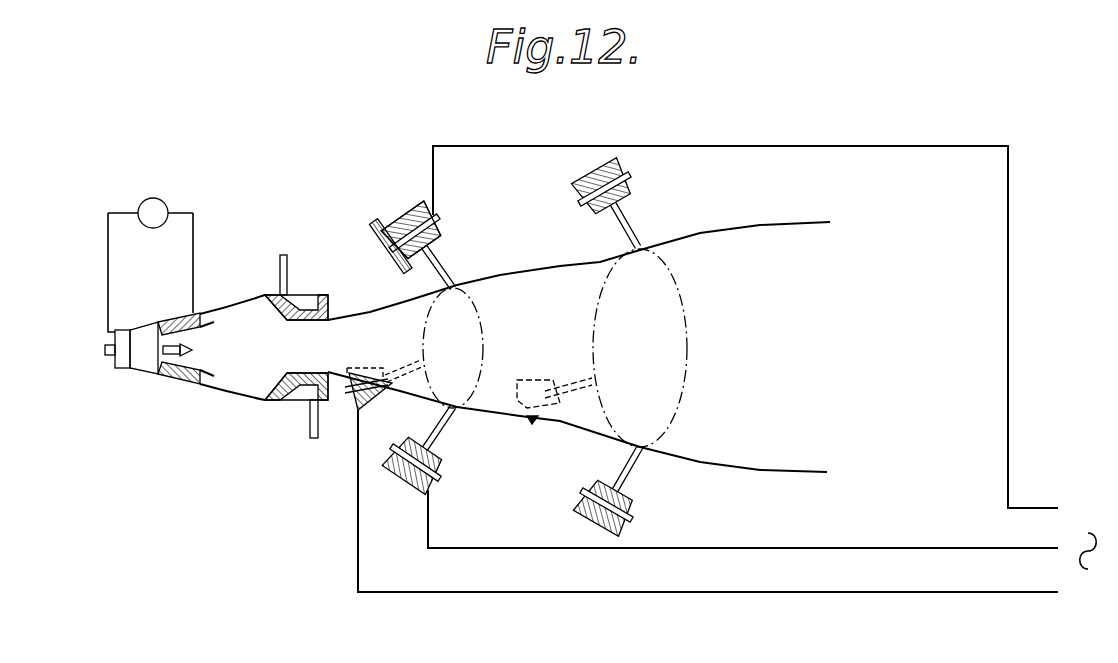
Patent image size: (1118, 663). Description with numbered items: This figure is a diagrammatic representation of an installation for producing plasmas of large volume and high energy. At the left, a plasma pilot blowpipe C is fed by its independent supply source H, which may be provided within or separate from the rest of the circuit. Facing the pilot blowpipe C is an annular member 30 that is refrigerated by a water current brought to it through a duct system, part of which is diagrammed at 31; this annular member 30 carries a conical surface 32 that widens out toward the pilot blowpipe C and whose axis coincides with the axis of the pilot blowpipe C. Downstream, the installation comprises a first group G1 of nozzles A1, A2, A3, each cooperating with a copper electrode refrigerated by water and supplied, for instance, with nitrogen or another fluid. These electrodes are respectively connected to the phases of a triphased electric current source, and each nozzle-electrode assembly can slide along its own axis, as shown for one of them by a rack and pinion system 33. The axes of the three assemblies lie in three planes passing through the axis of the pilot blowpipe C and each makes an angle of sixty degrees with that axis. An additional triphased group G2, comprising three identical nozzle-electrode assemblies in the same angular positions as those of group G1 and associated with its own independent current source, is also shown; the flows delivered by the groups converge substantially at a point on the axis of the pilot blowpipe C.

The pilot blowpipe C is at (147, 337).
The independent supply source H is at (150, 265).
The annular member 30 is at (302, 312).
The duct system 31 is at (310, 422).
The conical surface 32 is at (270, 396).
The rack and pinion system 33 is at (390, 262).
The group of nozzle-electrode assemblies G1 is at (399, 199).
The additional group of nozzle-electrode assemblies G2 is at (596, 154).
The nozzle A1 is at (438, 226).
The nozzle A2 is at (432, 476).
The nozzle A3 is at (373, 397).